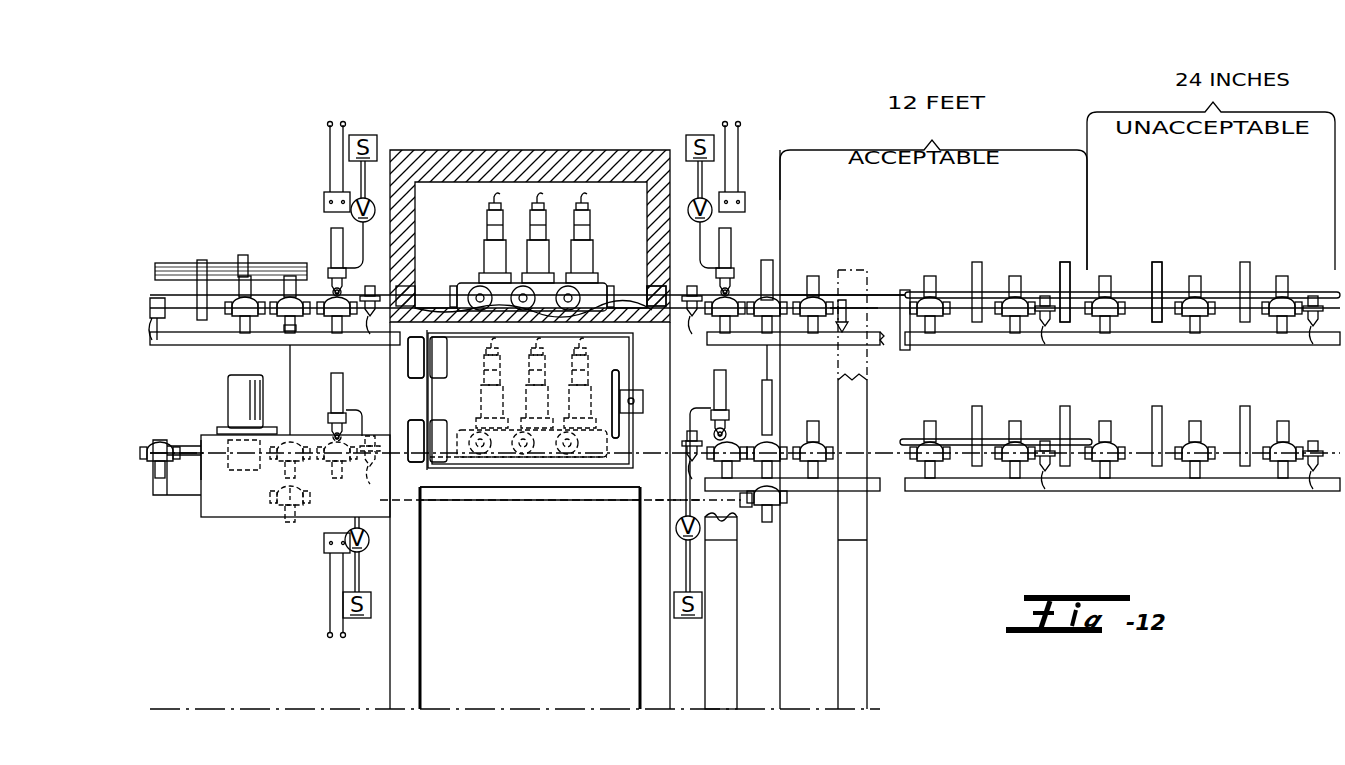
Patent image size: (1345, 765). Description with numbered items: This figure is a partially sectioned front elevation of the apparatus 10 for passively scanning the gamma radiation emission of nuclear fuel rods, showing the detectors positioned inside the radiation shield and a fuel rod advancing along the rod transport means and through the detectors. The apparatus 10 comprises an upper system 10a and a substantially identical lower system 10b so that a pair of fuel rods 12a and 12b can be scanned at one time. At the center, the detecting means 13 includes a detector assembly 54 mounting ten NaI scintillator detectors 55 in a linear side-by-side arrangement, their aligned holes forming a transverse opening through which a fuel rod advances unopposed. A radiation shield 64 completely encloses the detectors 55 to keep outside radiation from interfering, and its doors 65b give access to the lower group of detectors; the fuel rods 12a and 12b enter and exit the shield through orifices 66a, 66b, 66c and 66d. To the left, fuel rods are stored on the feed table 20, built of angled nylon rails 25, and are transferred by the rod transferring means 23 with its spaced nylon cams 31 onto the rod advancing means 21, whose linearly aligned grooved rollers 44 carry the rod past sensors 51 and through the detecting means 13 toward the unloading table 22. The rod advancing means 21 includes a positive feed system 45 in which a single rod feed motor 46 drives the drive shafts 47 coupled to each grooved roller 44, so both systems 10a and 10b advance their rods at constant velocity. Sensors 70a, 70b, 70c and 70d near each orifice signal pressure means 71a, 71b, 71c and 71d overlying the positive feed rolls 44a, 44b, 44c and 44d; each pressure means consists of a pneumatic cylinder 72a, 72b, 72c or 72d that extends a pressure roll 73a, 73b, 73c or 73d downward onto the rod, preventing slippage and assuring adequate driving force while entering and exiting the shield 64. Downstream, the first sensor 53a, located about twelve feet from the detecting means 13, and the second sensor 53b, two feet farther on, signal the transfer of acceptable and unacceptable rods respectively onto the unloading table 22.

The apparatus 10 is at (530, 68).
The upper system 10a is at (1222, 232).
The lower system 10b is at (1197, 503).
The fuel rod 12a is at (795, 300).
The fuel rod 12b is at (190, 450).
The detecting means 13 is at (560, 140).
The feed table 20 is at (237, 245).
The rod advancing means 21 is at (1120, 295).
The unloading table 22 is at (920, 285).
The rod transferring means 23 is at (1160, 268).
The nylon rails 25 is at (1095, 445).
The nylon cams 31 is at (287, 255).
The grooved rollers 44 is at (245, 310).
The positive feed roll 44a is at (287, 332).
The positive feed roll 44b is at (763, 335).
The positive feed roll 44c is at (330, 498).
The positive feed roll 44d is at (733, 495).
The positive feed system 45 is at (572, 507).
The rod feed motor 46 is at (228, 395).
The drive shafts 47 is at (174, 300).
The sensors 51 is at (844, 298).
The first sensor 53a is at (1045, 300).
The second sensor 53b is at (1313, 300).
The detector assembly 54 is at (480, 192).
The detectors 55 is at (543, 225).
The radiation shield 64 is at (580, 150).
The doors 65b is at (500, 462).
The orifice 66a is at (400, 288).
The orifice 66b is at (665, 289).
The orifice 66c is at (410, 423).
The orifice 66d is at (655, 393).
The sensor 70a is at (367, 328).
The sensor 70b is at (690, 322).
The sensor 70c is at (380, 455).
The sensor 70d is at (685, 448).
The pressure means 71a is at (363, 136).
The pressure means 71b is at (700, 136).
The pressure means 71c is at (357, 618).
The pressure means 71d is at (690, 618).
The pneumatic cylinder 72a is at (338, 240).
The pneumatic cylinder 72b is at (733, 245).
The pneumatic cylinder 72c is at (335, 395).
The pneumatic cylinder 72d is at (718, 378).
The pressure roll 73a is at (338, 284).
The pressure roll 73b is at (727, 285).
The pressure roll 73c is at (337, 440).
The pressure roll 73d is at (725, 431).